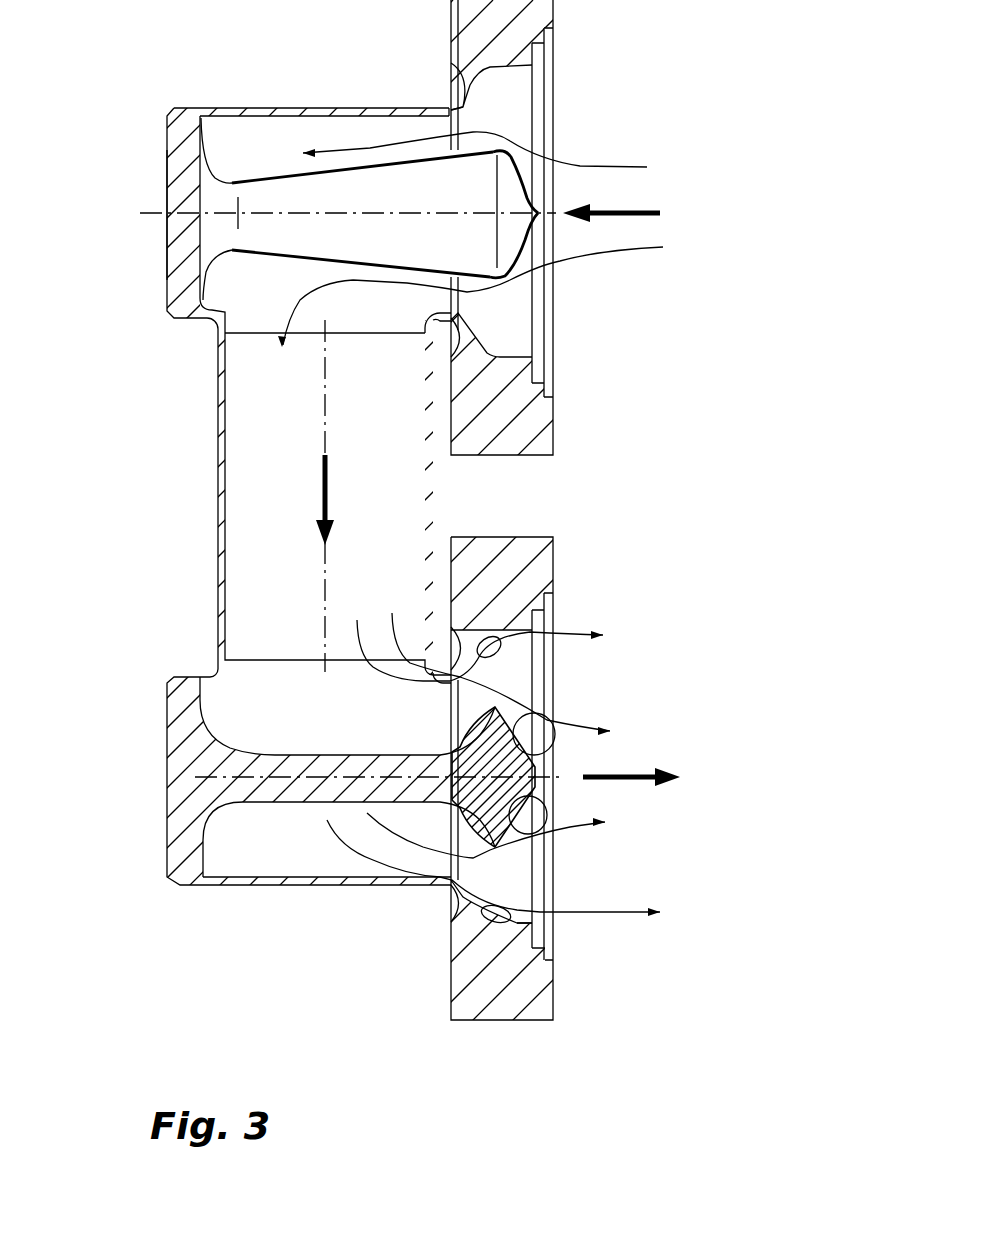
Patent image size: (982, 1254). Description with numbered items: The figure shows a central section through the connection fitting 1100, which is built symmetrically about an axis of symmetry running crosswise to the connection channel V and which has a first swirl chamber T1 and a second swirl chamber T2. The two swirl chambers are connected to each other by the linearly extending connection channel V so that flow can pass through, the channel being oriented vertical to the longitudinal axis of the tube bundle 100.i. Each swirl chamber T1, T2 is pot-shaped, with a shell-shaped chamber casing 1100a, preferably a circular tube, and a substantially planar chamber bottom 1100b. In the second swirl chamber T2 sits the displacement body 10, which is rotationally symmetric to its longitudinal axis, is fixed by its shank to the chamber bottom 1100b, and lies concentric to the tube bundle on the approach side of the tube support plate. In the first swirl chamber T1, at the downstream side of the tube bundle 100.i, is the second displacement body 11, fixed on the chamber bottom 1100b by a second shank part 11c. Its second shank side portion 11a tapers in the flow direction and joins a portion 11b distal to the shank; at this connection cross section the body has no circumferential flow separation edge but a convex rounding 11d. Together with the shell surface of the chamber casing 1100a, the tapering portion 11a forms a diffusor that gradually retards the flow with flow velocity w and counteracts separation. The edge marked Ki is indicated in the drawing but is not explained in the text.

The displacement body 10 is at (468, 823).
The second displacement body 11 is at (457, 163).
The second shank side portion 11a is at (488, 155).
The portion distal to the shank 11b is at (507, 230).
The second shank part 11c is at (226, 200).
The convex rounding 11d is at (438, 202).
The connection fitting 1100 is at (491, 525).
The chamber casing 1100a is at (406, 113).
The chamber bottom 1100b is at (183, 268).
The tube bundle 100.i is at (805, 208).
The sealing edge Ki is at (505, 70).
The first swirl chamber T1 is at (348, 264).
The second swirl chamber T2 is at (377, 822).
The connection channel V is at (319, 496).
The flow velocity w is at (477, 526).